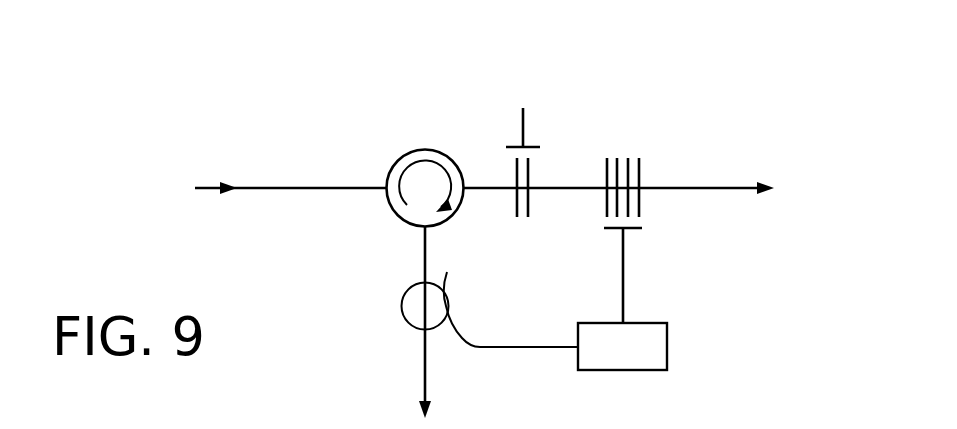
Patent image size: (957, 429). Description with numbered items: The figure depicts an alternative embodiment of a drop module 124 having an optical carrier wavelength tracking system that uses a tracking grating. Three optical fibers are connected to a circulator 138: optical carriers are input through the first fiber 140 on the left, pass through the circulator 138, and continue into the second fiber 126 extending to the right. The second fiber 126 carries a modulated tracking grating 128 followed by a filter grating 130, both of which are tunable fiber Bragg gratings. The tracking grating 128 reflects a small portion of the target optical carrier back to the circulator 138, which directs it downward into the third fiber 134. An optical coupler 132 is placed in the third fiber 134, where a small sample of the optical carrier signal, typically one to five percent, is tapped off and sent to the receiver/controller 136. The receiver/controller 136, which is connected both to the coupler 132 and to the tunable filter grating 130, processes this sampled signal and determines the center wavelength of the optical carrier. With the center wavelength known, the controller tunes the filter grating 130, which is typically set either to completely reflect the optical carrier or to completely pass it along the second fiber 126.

The drop module 124 is at (742, 76).
The second fiber 126 is at (700, 185).
The modulated tracking grating 128 is at (522, 219).
The filter grating 130 is at (620, 157).
The optical coupler 132 is at (401, 300).
The third fiber 134 is at (425, 253).
The receiver/controller mechanism 136 is at (555, 321).
The circulator 138 is at (434, 149).
The first fiber 140 is at (290, 186).